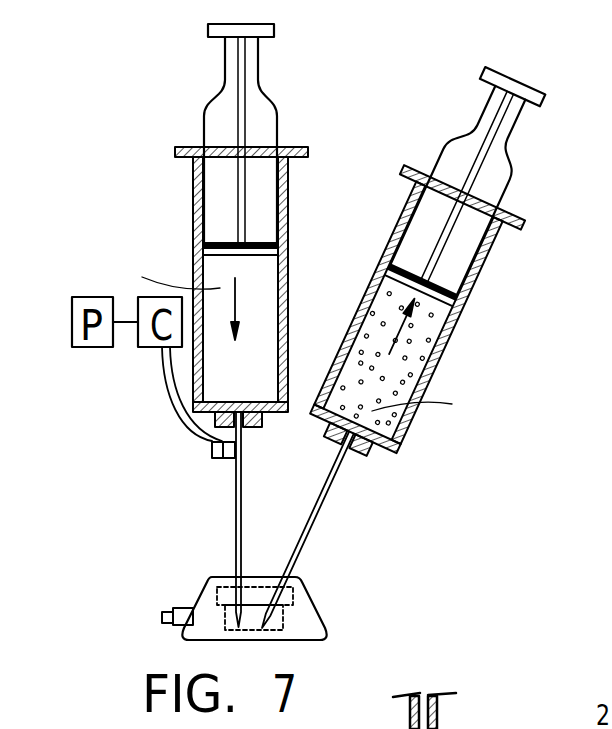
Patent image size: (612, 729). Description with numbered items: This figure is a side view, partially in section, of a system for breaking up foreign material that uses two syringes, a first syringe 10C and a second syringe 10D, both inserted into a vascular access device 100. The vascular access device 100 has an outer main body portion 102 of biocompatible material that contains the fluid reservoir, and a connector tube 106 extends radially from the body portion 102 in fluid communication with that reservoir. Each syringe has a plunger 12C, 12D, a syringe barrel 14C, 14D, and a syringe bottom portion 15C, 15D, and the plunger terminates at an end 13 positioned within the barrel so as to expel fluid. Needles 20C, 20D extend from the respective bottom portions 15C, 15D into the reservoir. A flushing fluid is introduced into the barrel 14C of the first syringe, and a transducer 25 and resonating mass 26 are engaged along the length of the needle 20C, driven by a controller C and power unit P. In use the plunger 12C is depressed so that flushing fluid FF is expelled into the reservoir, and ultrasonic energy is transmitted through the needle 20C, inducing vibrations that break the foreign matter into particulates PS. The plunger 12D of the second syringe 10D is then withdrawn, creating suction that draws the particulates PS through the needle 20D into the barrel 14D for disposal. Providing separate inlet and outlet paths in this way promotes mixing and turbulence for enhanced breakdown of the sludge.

The first syringe 10C is at (246, 316).
The plunger 12C is at (268, 103).
The end 13 is at (290, 214).
The syringe barrel 14C is at (258, 253).
The syringe bottom portion 15C is at (272, 418).
The needle 20C is at (236, 566).
The transducer 25 is at (228, 460).
The resonating mass 26 is at (214, 459).
The vascular access device 100 is at (247, 583).
The outer main body portion 102 is at (308, 590).
The connector tube 106 is at (184, 592).
The second syringe 10D is at (435, 336).
The plunger 12D is at (508, 158).
The syringe barrel 14D is at (460, 312).
The syringe bottom portion 15D is at (380, 447).
The needle 20D is at (312, 533).